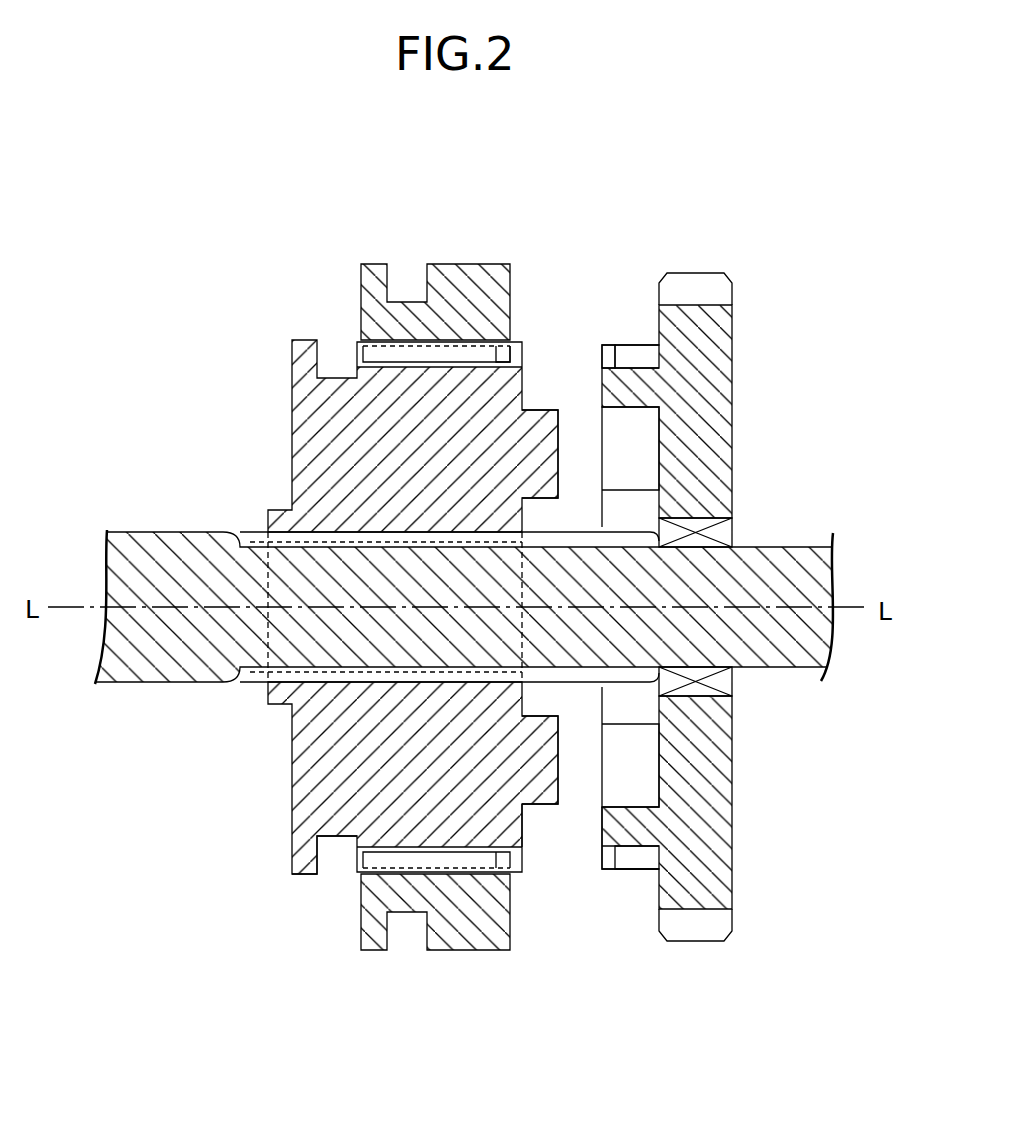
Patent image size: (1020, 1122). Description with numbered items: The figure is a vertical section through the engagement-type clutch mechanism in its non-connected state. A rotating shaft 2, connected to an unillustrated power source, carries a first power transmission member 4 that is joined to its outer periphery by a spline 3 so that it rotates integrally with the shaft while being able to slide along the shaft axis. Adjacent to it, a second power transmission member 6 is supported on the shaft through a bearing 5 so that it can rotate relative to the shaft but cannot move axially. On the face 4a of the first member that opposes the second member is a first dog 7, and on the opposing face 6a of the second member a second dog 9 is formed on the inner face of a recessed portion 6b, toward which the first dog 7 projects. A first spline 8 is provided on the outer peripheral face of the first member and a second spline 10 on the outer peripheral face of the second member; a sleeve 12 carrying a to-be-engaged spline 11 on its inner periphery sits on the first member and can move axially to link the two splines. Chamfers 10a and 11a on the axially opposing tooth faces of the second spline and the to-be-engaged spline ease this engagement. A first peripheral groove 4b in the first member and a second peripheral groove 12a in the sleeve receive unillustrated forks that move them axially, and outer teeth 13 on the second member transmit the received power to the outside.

The rotating shaft 2 is at (183, 533).
The spline 3 is at (317, 535).
The first power transmission member 4 is at (330, 413).
The face of the first power transmission member 4a is at (523, 823).
The first peripheral groove 4b is at (320, 850).
The bearing 5 is at (725, 535).
The second power transmission member 6 is at (715, 363).
The face of the second power transmission member 6a is at (603, 827).
The recessed portion 6b is at (632, 803).
The first dog 7 is at (538, 420).
The first spline 8 is at (513, 863).
The second dog 9 is at (610, 453).
The second spline 10 is at (637, 353).
The chamfer 10a is at (609, 353).
The to-be-engaged spline 11 is at (380, 355).
The chamfer 11a is at (503, 355).
The sleeve 12 is at (462, 280).
The second peripheral groove 12a is at (392, 942).
The outer teeth 13 is at (690, 278).